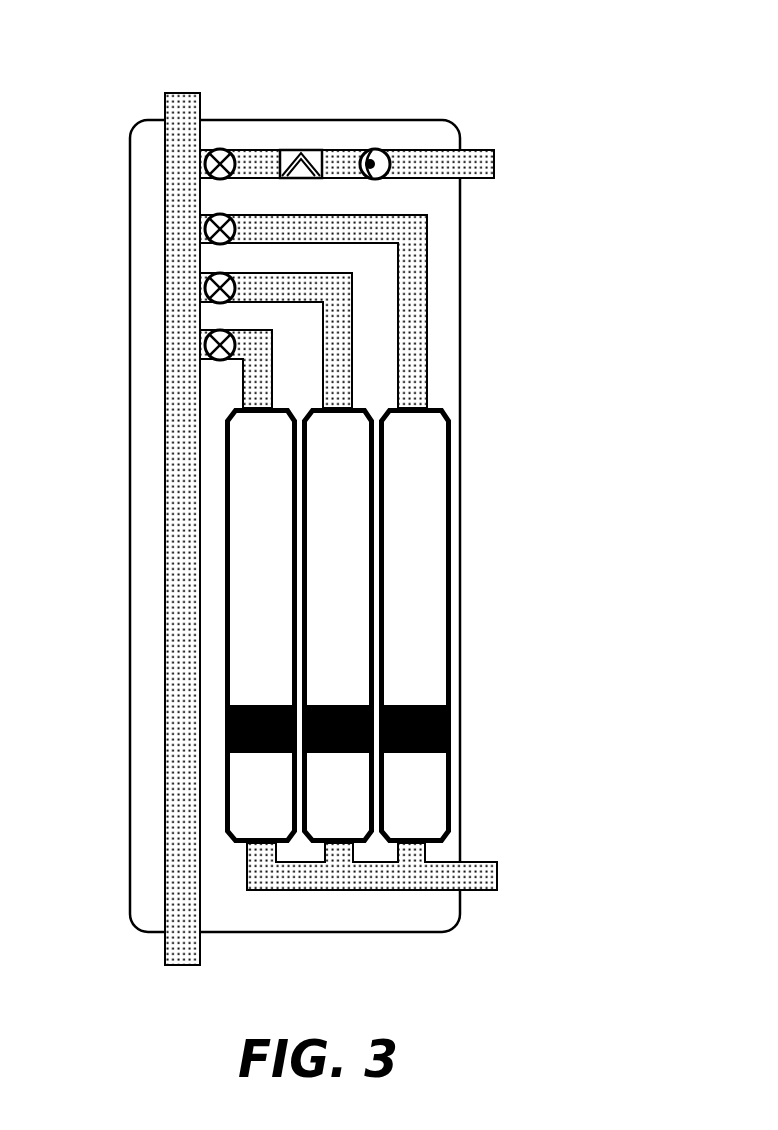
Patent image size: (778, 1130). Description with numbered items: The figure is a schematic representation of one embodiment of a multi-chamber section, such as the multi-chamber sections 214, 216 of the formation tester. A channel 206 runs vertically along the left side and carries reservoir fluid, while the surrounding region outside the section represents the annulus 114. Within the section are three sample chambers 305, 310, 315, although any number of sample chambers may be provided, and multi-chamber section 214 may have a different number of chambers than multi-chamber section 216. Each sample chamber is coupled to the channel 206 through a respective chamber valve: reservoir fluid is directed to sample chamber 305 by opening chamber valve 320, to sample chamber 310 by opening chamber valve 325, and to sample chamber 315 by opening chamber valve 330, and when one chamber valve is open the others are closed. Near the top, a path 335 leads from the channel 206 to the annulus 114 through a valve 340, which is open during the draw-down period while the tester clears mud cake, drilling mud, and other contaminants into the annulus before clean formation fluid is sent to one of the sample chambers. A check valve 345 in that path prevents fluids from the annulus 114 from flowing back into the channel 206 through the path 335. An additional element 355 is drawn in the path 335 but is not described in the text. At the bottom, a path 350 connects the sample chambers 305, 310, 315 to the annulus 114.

The annulus 114 is at (568, 549).
The channel 206 is at (165, 437).
The multi-chamber section 214 is at (562, 50).
The multi-chamber section 216 is at (306, 487).
The sample chamber 305 is at (280, 584).
The sample chamber 310 is at (358, 584).
The sample chamber 315 is at (431, 584).
The chamber valve 320 is at (222, 330).
The chamber valve 325 is at (222, 273).
The chamber valve 330 is at (222, 214).
The path 335 is at (472, 150).
The valve 340 is at (222, 150).
The check valve 345 is at (376, 150).
The path 350 is at (477, 862).
The check valve / filter 355 is at (301, 150).